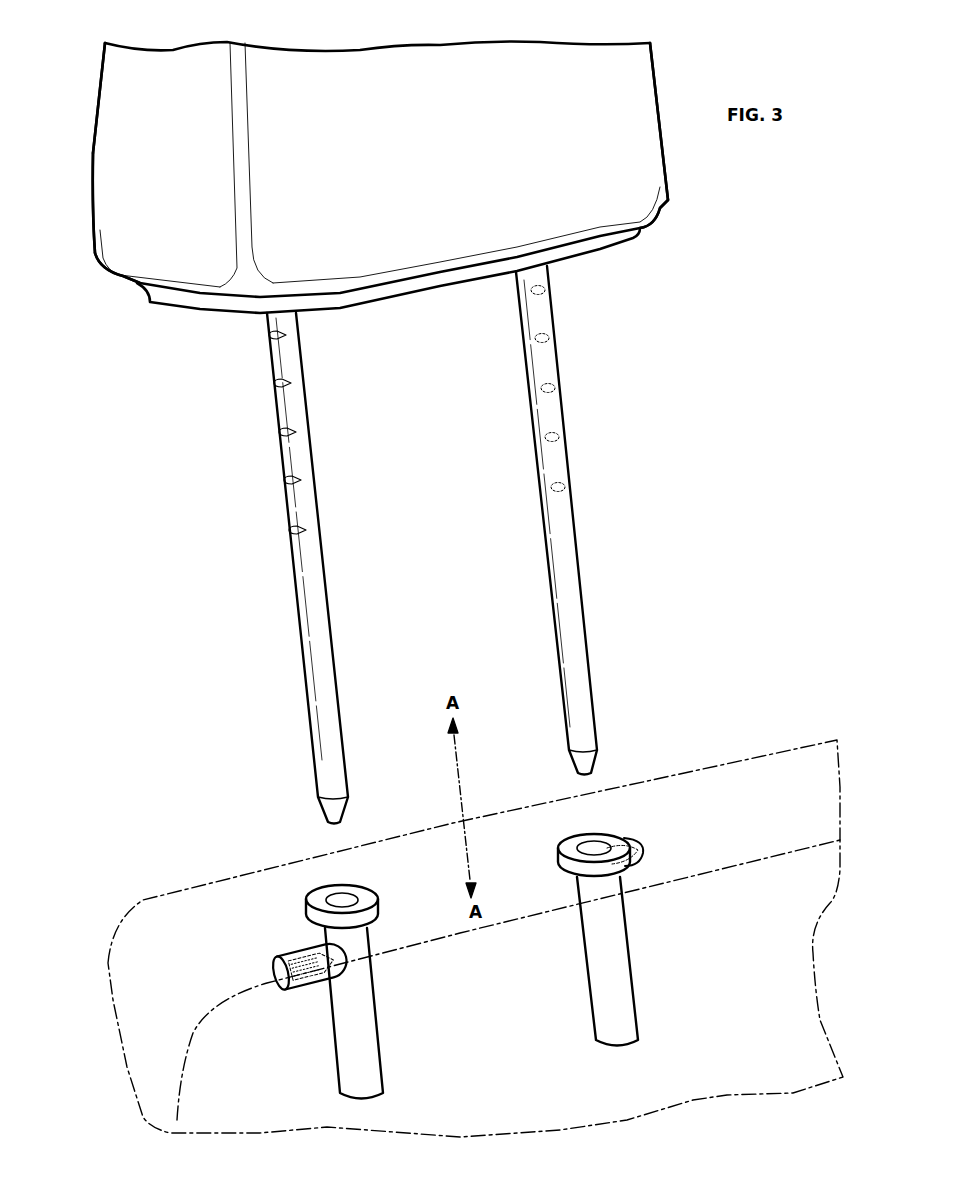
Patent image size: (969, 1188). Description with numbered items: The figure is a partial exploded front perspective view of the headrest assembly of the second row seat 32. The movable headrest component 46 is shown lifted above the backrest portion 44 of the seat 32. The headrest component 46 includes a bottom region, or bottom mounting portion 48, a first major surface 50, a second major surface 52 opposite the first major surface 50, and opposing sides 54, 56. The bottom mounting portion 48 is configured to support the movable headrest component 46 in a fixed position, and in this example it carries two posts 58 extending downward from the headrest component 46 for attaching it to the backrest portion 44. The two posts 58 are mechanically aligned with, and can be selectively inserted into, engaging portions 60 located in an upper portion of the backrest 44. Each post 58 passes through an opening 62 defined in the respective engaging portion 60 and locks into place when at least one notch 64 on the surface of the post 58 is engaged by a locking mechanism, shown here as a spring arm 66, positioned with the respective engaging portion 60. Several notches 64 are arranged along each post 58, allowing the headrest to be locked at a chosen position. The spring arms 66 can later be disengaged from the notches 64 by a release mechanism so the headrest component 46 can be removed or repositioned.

The second row seat 32 is at (779, 358).
The backrest portion 44 is at (103, 977).
The movable headrest component 46 is at (400, 152).
The bottom mounting portion 48 is at (373, 297).
The first major surface 50 is at (227, 238).
The second major surface 52 is at (137, 170).
The opposing side 54 is at (105, 113).
The opposing side 56 is at (640, 120).
The post 58 is at (305, 388).
The engaging portion 60 is at (377, 1003).
The opening 62 is at (342, 903).
The notch 64 is at (271, 337).
The spring arm 66 is at (300, 957).